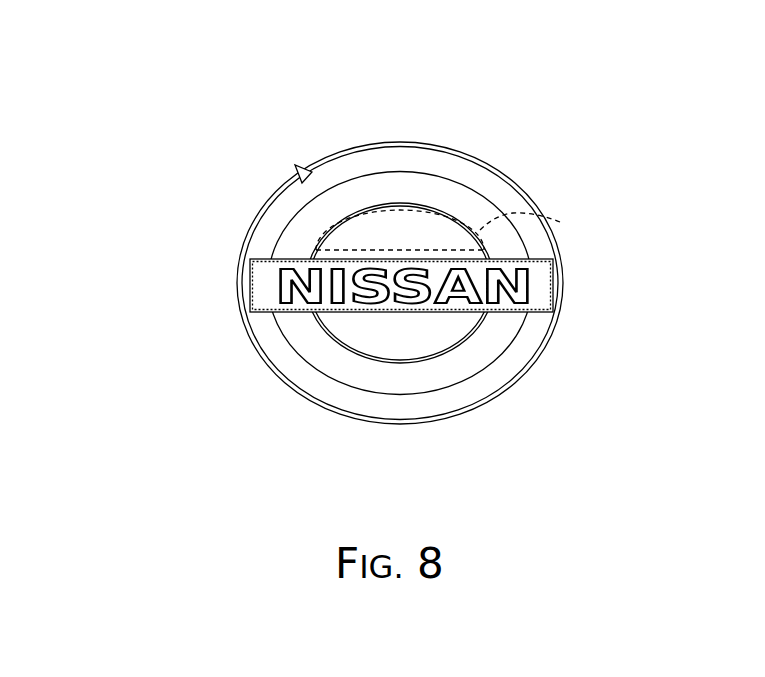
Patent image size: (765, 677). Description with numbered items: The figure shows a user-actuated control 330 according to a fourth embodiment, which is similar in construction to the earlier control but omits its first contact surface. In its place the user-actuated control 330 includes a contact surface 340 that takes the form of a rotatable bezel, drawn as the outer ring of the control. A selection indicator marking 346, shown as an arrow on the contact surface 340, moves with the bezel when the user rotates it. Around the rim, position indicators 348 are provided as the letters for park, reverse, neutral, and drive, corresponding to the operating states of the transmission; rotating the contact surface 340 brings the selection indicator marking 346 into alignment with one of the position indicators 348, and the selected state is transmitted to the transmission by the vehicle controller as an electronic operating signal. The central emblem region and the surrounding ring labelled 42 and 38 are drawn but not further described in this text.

The user-actuated control 330 is at (127, 130).
The outer bezel ring 38 is at (561, 280).
The contact surface 340 is at (252, 223).
The display region 42 is at (560, 222).
The selection indicator marking 346 is at (297, 170).
The position indicators 348 is at (268, 133).